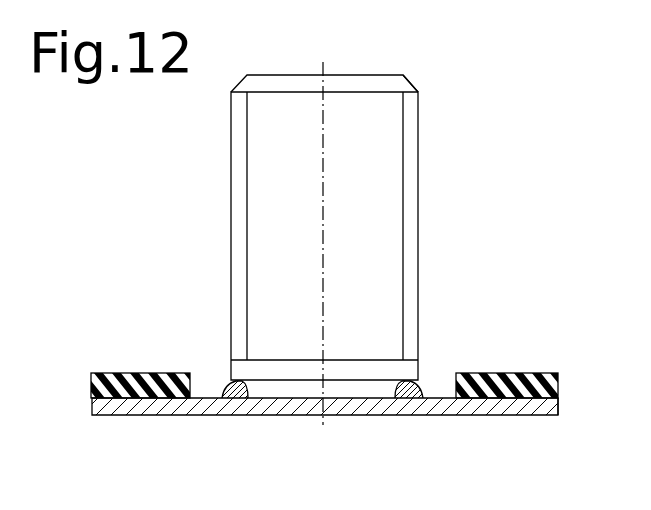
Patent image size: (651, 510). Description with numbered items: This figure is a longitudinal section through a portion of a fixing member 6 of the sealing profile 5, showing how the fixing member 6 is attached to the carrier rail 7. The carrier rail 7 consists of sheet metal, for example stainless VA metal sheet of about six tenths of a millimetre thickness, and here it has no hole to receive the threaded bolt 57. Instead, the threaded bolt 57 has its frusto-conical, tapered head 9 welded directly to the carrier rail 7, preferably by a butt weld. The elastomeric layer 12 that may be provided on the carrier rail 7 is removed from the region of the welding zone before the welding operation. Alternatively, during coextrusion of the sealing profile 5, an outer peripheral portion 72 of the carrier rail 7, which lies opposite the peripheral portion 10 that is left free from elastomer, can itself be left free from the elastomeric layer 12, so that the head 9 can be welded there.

The sealing profile 5 is at (105, 415).
The fixing member 6 is at (419, 222).
The carrier rail 7 is at (558, 410).
The head 9 is at (378, 392).
The peripheral region 10 is at (192, 415).
The elastomeric layer 12 is at (557, 373).
The threaded bolt 57 is at (419, 90).
The outer peripheral portion 72 is at (212, 397).